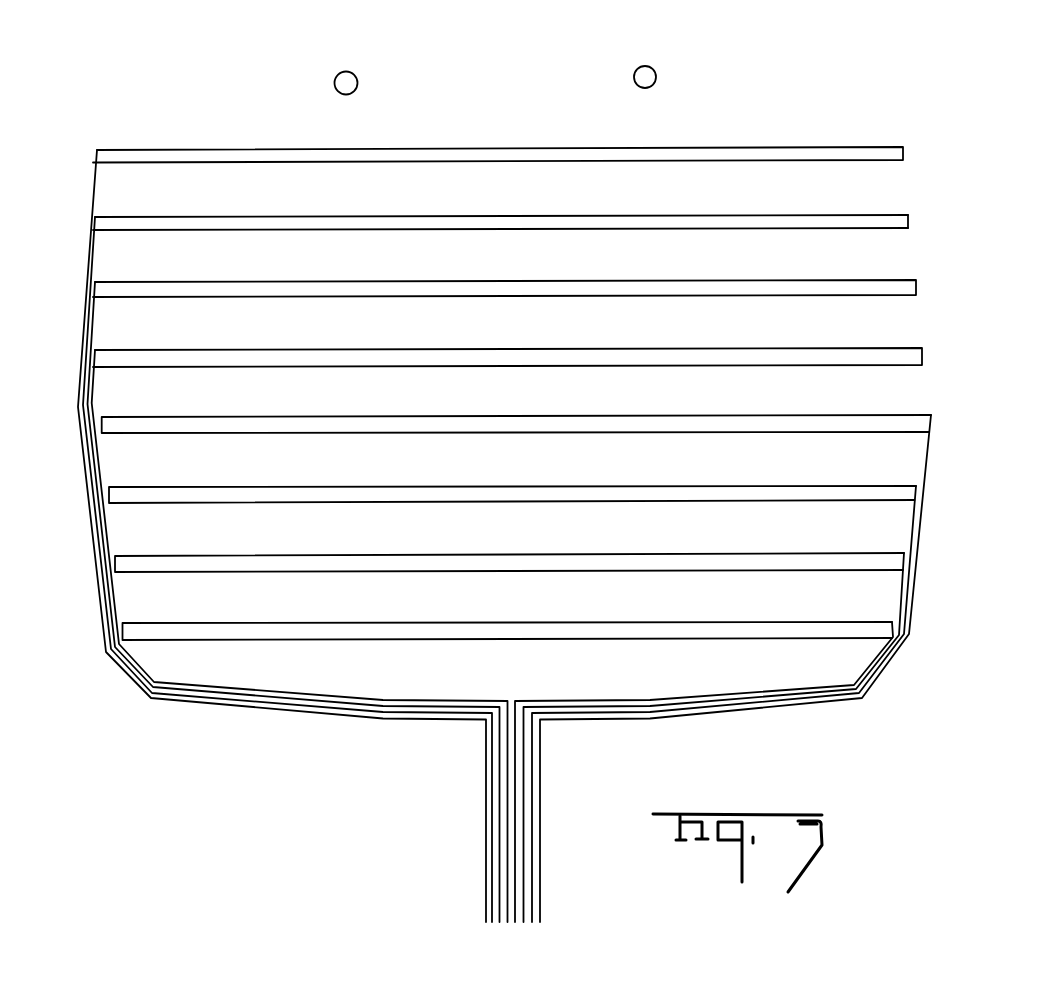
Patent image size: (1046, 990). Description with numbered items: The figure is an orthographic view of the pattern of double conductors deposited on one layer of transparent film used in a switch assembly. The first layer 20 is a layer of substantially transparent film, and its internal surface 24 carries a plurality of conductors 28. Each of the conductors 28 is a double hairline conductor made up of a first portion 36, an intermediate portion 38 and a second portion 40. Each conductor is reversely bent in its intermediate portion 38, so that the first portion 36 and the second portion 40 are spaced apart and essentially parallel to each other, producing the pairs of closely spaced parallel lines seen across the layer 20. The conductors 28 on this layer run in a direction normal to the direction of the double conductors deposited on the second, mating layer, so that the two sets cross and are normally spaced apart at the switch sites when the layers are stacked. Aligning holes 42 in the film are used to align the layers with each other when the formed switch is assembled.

The first layer 20 is at (508, 506).
The internal surface 24 is at (471, 613).
The conductors 28 is at (906, 145).
The first portion 36 is at (659, 215).
The intermediate portion 38 is at (908, 217).
The second portion 40 is at (657, 230).
The aligning holes 42 is at (352, 74).